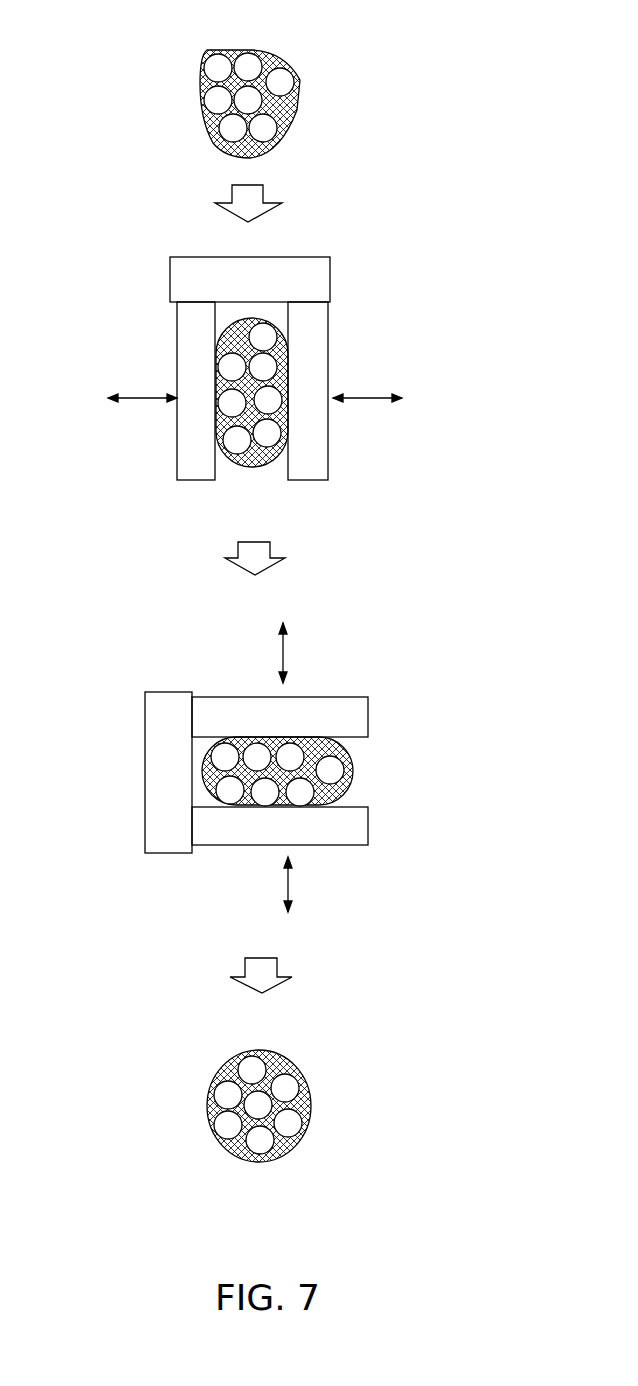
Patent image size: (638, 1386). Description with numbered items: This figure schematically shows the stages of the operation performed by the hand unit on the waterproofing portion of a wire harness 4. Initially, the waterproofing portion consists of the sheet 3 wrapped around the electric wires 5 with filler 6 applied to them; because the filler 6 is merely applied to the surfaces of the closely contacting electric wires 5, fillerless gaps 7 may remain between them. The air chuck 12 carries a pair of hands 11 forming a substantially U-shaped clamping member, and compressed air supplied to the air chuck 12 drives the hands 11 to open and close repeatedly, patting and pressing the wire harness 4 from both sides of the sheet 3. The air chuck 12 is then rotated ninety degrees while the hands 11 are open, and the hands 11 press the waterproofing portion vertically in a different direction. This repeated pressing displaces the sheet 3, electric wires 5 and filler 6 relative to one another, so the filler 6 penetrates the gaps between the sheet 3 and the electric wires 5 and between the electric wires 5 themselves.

The sheet 3 is at (272, 47).
The wire harness 4 is at (269, 600).
The electric wires 5 is at (282, 84).
The filler 6 is at (300, 117).
The fillerless gaps 7 is at (200, 123).
The hands 11 is at (177, 347).
The air chuck 12 is at (330, 277).